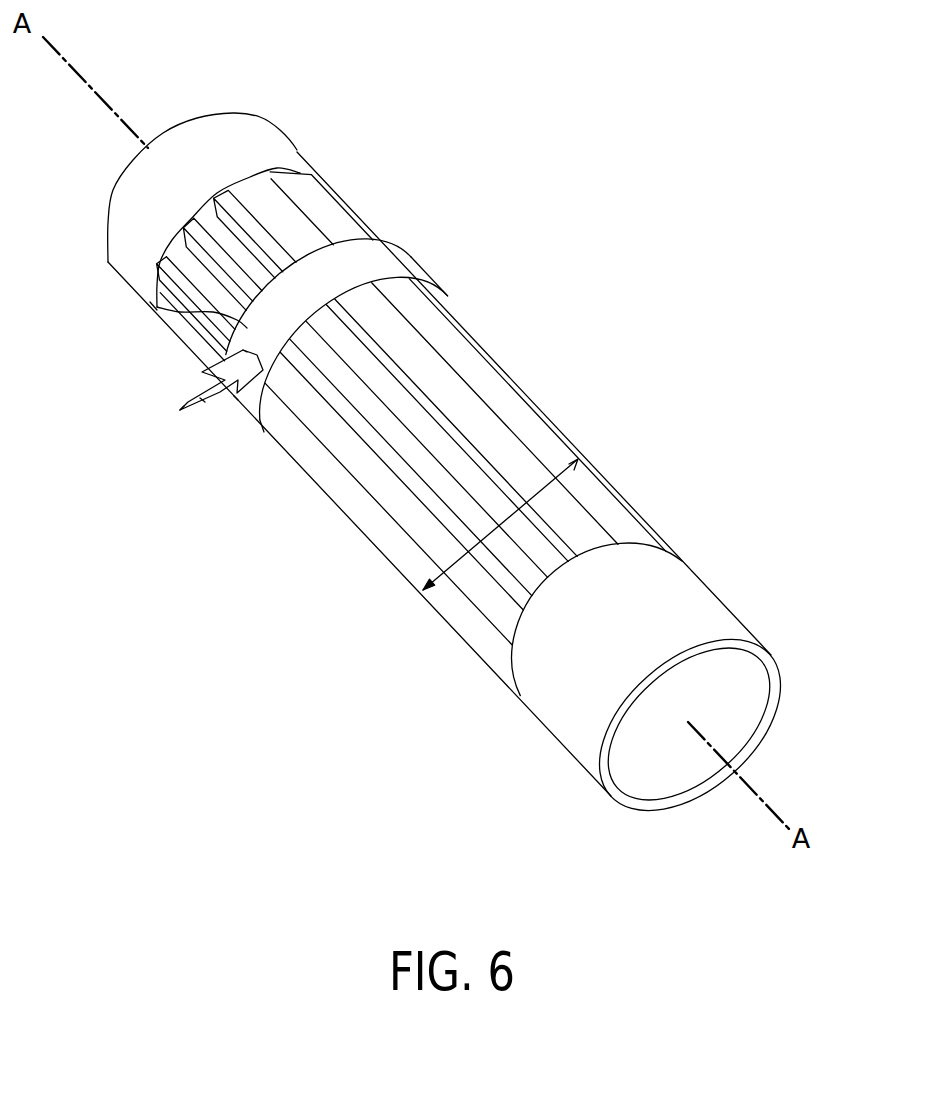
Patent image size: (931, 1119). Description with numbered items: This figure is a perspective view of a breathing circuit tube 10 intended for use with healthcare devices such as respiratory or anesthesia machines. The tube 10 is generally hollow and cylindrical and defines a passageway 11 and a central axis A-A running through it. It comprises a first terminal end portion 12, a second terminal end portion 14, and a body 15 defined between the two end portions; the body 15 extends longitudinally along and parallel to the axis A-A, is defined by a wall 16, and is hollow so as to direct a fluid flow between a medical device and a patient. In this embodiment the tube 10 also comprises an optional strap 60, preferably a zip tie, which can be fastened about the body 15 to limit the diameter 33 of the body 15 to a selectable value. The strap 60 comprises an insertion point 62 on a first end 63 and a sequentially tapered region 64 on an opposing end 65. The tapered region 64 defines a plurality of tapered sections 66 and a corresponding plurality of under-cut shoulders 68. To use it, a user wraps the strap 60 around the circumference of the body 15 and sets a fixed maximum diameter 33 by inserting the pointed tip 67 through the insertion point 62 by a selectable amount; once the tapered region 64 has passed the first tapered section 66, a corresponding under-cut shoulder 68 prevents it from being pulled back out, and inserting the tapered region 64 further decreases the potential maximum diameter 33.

The tube 10 is at (728, 267).
The passageway 11 is at (740, 702).
The first terminal end portion 12 is at (690, 604).
The second terminal end portion 14 is at (262, 156).
The body 15 is at (438, 367).
The wall 16 is at (503, 395).
The diameter 33 is at (548, 488).
The strap 60 is at (386, 270).
The insertion point 62 is at (266, 432).
The first end 63 is at (157, 310).
The sequentially tapered region 64 is at (222, 380).
The opposing end 65 is at (227, 362).
The tapered sections 66 is at (205, 402).
The pointed tip 67 is at (182, 408).
The under-cut shoulders 68 is at (237, 398).